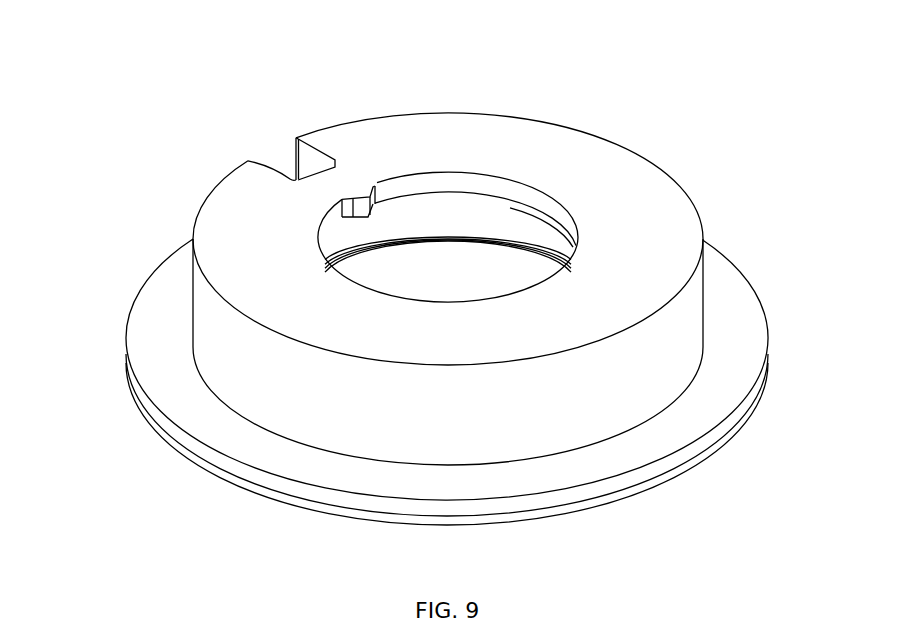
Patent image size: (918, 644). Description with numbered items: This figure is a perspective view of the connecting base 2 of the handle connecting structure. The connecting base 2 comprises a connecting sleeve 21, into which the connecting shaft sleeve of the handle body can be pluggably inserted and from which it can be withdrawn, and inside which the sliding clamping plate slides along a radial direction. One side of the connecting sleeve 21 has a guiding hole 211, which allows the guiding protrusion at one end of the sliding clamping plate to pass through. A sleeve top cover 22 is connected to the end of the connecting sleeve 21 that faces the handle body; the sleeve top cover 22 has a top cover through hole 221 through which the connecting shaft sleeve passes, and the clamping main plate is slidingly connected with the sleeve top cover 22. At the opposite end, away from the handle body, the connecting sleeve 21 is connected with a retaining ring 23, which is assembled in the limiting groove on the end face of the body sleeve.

The connecting base 2 is at (442, 281).
The connecting sleeve 21 is at (472, 376).
The sleeve top cover 22 is at (453, 251).
The retaining ring 23 is at (178, 440).
The guiding hole 211 is at (285, 175).
The top cover through hole 221 is at (466, 212).